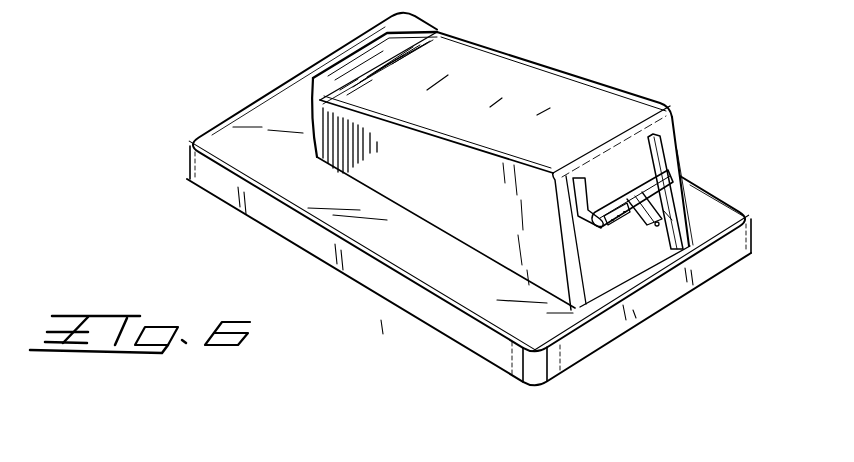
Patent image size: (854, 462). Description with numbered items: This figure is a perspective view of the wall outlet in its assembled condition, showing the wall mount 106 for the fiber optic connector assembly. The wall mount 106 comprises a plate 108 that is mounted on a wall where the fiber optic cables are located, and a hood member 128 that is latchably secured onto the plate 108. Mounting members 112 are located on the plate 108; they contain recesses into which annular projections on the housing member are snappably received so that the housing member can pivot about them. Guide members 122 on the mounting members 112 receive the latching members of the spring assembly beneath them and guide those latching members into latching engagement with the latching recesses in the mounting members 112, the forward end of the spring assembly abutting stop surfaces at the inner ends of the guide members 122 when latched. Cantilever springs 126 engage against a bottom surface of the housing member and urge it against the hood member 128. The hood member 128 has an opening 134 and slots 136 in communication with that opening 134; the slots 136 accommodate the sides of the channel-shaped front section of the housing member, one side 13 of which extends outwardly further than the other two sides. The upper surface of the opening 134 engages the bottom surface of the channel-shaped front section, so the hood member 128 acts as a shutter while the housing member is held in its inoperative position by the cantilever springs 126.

The wall mount 106 is at (393, 310).
The plate 108 is at (270, 225).
The hood member 128 is at (512, 64).
The side 13 is at (637, 196).
The mounting members 112 is at (655, 197).
The opening 134 is at (657, 218).
The slots 136 is at (565, 207).
The cantilever springs 126 is at (665, 247).
The guide members 122 is at (641, 226).